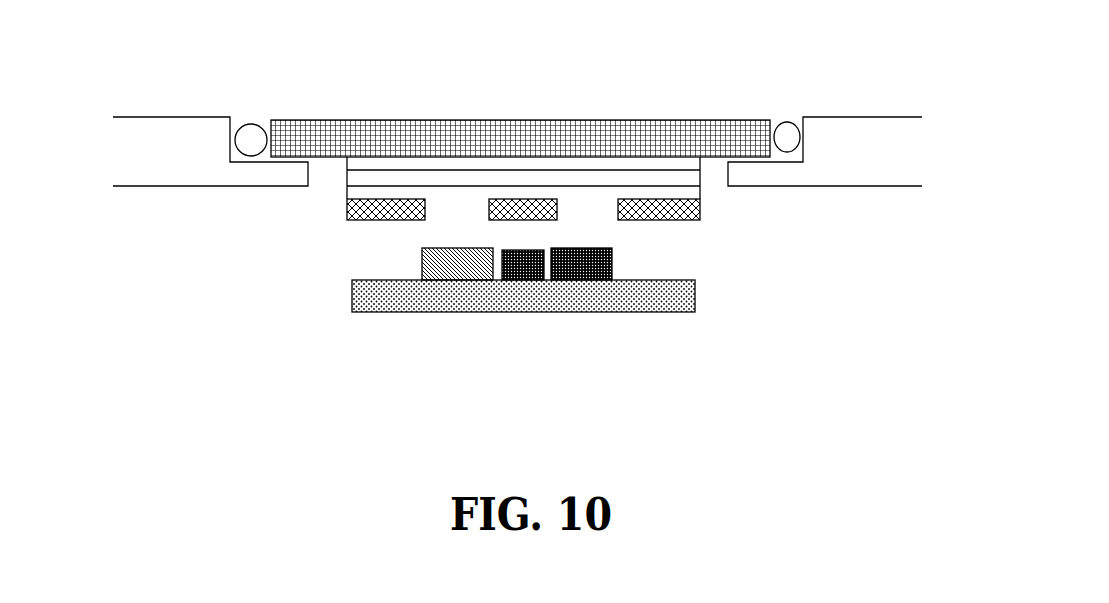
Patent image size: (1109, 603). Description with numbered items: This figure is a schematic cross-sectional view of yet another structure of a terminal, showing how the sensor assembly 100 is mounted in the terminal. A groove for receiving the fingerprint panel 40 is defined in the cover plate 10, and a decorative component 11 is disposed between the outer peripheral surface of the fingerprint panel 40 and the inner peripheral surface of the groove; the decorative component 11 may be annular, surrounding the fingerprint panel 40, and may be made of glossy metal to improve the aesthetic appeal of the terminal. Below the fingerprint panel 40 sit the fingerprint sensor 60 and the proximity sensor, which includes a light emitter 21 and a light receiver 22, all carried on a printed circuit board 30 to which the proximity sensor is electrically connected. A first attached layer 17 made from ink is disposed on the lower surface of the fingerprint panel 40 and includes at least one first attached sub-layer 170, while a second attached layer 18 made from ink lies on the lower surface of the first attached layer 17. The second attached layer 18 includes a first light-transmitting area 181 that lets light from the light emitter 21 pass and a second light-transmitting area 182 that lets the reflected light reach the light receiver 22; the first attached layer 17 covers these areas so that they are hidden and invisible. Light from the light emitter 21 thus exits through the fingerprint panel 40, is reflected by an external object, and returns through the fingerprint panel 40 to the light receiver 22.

The sensor assembly 100 is at (331, 100).
The cover plate 10 is at (127, 155).
The decorative component 11 is at (245, 145).
The first light-transmitting area 181 is at (453, 202).
The second light-transmitting area 182 is at (593, 202).
The first attached sub-layer 170 is at (700, 162).
The first attached layer 17 is at (587, 201).
The second attached layer 18 is at (700, 199).
The fingerprint panel 40 is at (655, 157).
The printed circuit board 30 is at (428, 297).
The light emitter 21 is at (457, 265).
The fingerprint sensor 60 is at (533, 275).
The light receiver 22 is at (593, 275).